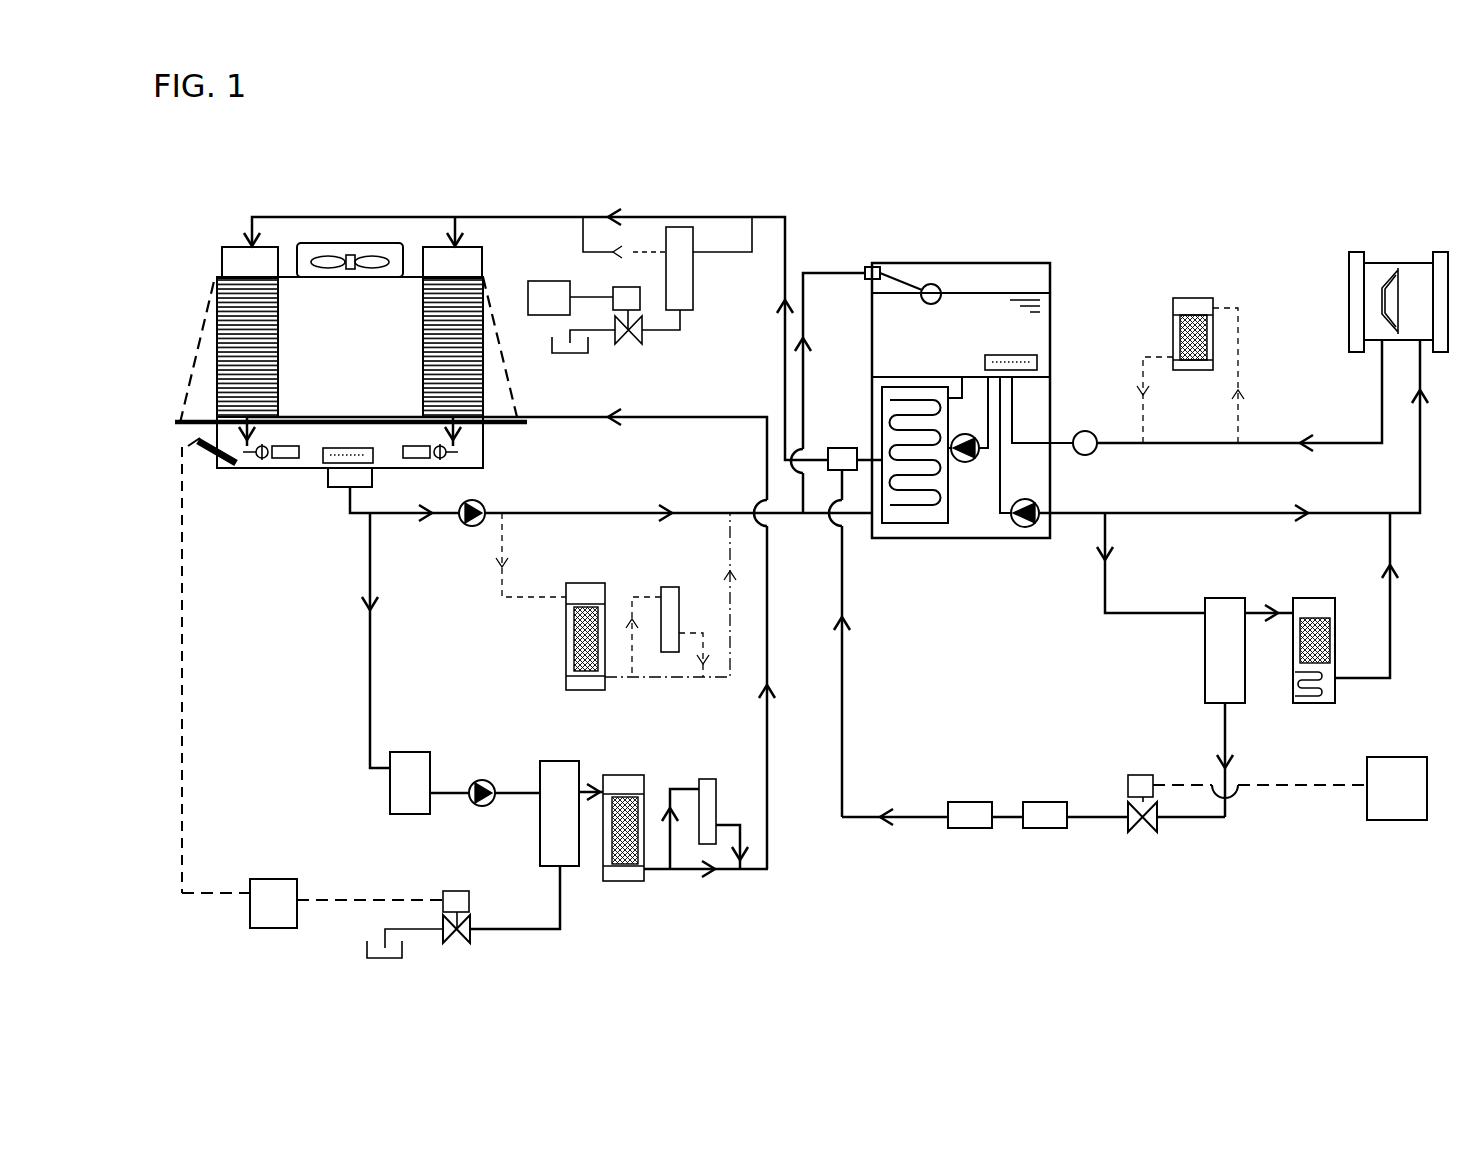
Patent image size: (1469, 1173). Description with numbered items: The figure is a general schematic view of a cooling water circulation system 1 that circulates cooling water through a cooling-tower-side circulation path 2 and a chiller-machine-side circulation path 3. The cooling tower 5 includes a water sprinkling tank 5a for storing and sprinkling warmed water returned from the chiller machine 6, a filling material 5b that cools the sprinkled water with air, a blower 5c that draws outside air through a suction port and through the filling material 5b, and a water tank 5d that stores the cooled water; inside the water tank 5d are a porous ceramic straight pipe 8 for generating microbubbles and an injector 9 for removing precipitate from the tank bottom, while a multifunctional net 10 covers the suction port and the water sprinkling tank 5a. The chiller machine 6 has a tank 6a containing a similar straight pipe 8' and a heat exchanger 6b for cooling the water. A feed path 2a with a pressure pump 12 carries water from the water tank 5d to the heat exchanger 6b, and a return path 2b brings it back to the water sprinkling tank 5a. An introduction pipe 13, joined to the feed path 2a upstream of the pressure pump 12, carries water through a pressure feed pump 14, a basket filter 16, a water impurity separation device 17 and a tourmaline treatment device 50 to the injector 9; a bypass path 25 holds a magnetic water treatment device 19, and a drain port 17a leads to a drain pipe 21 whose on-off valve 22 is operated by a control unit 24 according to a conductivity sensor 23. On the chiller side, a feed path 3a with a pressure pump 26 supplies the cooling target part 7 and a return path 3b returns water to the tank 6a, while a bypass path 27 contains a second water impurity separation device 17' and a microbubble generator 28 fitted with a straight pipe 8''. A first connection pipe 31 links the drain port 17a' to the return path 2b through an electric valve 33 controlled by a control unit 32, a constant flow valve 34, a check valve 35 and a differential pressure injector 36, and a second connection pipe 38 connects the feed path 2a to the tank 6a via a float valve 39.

The cooling water circulation system 1 is at (1028, 198).
The cooling-tower-side circulation path 2 is at (345, 643).
The feed path 2a is at (555, 512).
The return path 2b is at (708, 215).
The chiller-machine-side circulation path 3 is at (1400, 604).
The feed path 3a is at (1178, 518).
The return path 3b is at (1275, 441).
The cooling tower 5 is at (200, 288).
The water sprinkling tank 5a is at (222, 262).
The filling material 5b is at (237, 310).
The blower 5c is at (345, 256).
The water tank 5d is at (227, 437).
The chiller machine 6 is at (1058, 250).
The tank 6a is at (987, 300).
The heat exchanger 6b is at (950, 500).
The cooling target part 7 is at (1343, 245).
The straight pipe 8 is at (332, 493).
The straight pipe 8' is at (1044, 341).
The straight pipe 8'' is at (1319, 721).
The injector 9 is at (290, 458).
The multifunctional net 10 is at (230, 246).
The pressure pump 12 is at (472, 528).
The introduction pipe 13 is at (370, 690).
The pressure feed pump 14 is at (483, 780).
The basket filter 16 is at (405, 752).
The water impurity separation device 17 is at (642, 541).
The drain port 17a is at (606, 870).
The water impurity separation device 17' is at (1212, 654).
The drain port 17a' is at (1181, 760).
The magnetic water treatment device 19 is at (672, 588).
The drain pipe 21 is at (490, 932).
The on-off valve 22 is at (455, 945).
The sensor 23 is at (198, 456).
The control unit 24 is at (268, 878).
The bypass path 25 is at (740, 822).
The pressure pump 26 is at (1025, 530).
The bypass path 27 is at (1110, 615).
The microbubble generator 28 is at (1305, 598).
The first connection pipe 31 is at (905, 820).
The control unit 32 is at (1385, 822).
The electric valve 33 is at (1140, 832).
The constant flow valve 34 is at (1045, 830).
The check valve 35 is at (975, 830).
The differential pressure injector 36 is at (845, 447).
The second connection pipe 38 is at (815, 265).
The float valve 39 is at (932, 282).
The tourmaline treatment device 50 is at (566, 625).